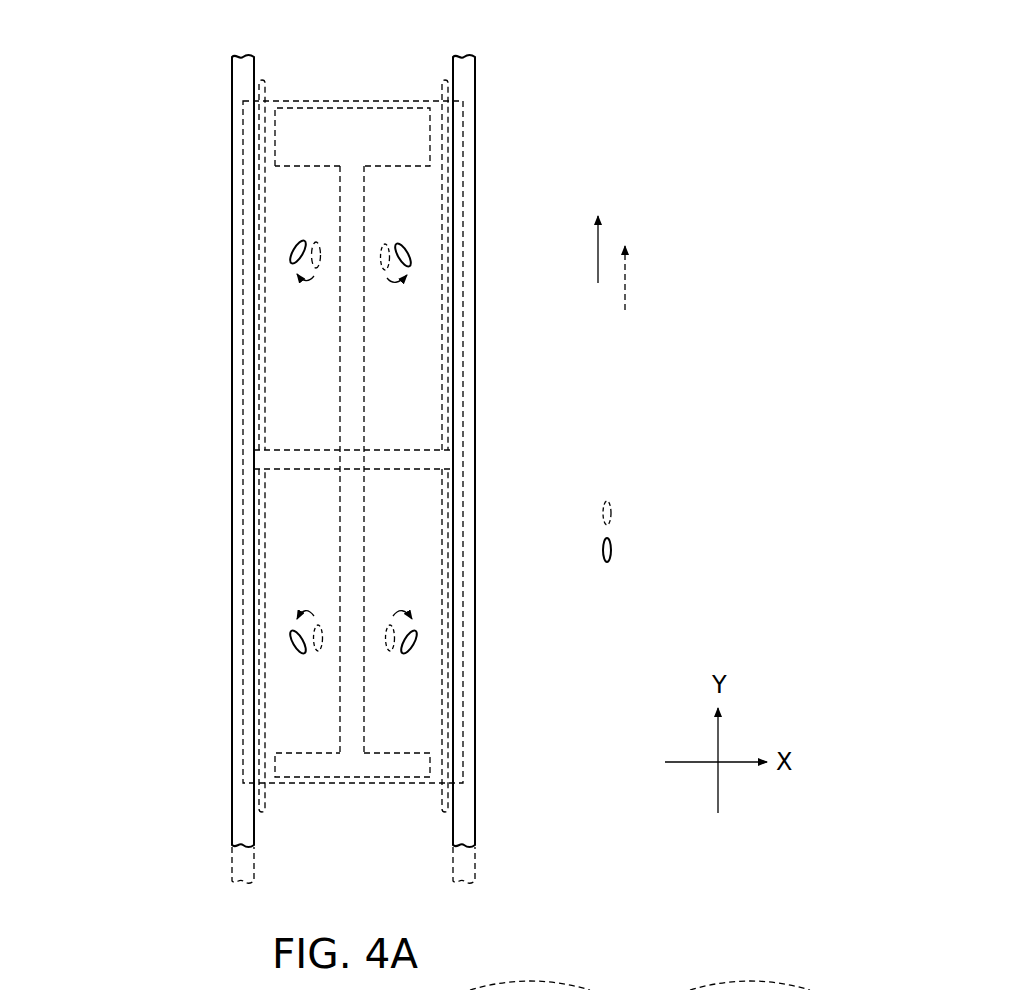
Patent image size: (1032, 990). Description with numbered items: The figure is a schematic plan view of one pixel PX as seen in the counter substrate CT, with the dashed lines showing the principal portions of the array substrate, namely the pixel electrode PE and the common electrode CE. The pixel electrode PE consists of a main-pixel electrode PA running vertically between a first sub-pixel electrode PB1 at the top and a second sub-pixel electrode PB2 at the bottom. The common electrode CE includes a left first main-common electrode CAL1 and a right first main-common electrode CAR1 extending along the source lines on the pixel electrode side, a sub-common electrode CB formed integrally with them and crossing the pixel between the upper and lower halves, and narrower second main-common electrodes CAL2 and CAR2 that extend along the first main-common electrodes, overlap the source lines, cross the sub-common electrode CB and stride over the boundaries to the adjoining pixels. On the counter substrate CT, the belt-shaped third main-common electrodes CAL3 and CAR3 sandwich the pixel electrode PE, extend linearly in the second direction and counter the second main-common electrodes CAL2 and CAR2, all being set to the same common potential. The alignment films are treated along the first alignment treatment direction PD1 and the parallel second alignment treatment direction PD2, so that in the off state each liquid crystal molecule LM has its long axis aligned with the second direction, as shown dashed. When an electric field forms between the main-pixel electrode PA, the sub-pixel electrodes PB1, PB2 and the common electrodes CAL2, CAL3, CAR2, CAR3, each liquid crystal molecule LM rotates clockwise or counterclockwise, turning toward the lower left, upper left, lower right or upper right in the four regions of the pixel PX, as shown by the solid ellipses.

The third main-common electrode CAL3 is at (233, 601).
The first main-common electrode CAL1 is at (256, 798).
The second main-common electrode CAL2 is at (235, 866).
The third main-common electrode CAR3 is at (475, 601).
The first main-common electrode CAR1 is at (456, 791).
The second main-common electrode CAR2 is at (476, 866).
The common electrode CE is at (267, 852).
The pixel PX is at (465, 98).
The sub-common electrode CB is at (303, 457).
The pixel electrode PE is at (402, 441).
The first sub-pixel electrode PB1 is at (317, 120).
The main-pixel electrode PA is at (365, 570).
The second sub-pixel electrode PB2 is at (317, 770).
The counter substrate CT is at (597, 36).
The second alignment treatment direction PD2 is at (600, 237).
The first alignment treatment direction PD1 is at (627, 272).
The liquid crystal molecule LM is at (581, 447).